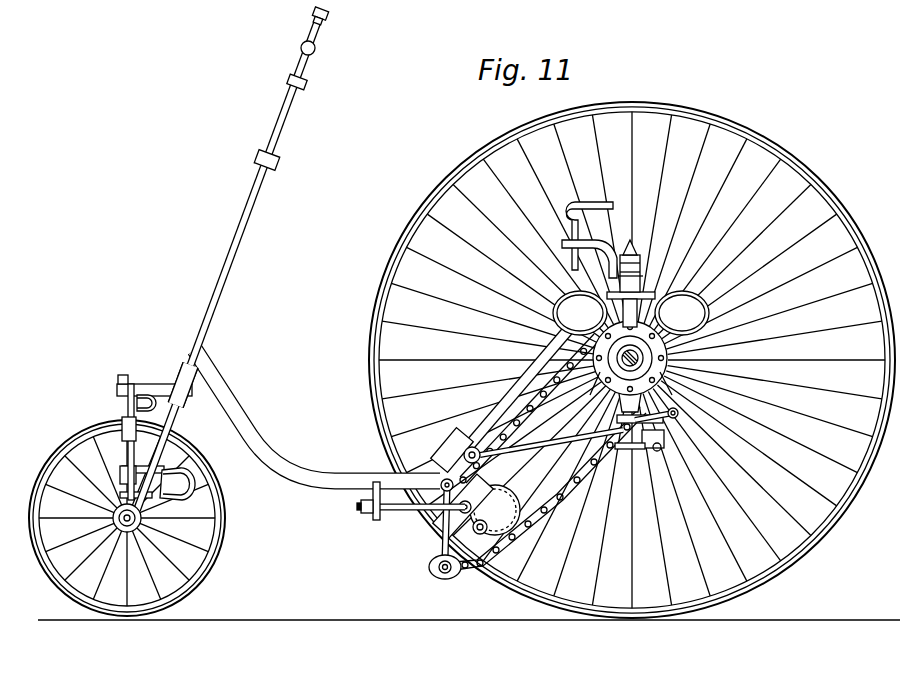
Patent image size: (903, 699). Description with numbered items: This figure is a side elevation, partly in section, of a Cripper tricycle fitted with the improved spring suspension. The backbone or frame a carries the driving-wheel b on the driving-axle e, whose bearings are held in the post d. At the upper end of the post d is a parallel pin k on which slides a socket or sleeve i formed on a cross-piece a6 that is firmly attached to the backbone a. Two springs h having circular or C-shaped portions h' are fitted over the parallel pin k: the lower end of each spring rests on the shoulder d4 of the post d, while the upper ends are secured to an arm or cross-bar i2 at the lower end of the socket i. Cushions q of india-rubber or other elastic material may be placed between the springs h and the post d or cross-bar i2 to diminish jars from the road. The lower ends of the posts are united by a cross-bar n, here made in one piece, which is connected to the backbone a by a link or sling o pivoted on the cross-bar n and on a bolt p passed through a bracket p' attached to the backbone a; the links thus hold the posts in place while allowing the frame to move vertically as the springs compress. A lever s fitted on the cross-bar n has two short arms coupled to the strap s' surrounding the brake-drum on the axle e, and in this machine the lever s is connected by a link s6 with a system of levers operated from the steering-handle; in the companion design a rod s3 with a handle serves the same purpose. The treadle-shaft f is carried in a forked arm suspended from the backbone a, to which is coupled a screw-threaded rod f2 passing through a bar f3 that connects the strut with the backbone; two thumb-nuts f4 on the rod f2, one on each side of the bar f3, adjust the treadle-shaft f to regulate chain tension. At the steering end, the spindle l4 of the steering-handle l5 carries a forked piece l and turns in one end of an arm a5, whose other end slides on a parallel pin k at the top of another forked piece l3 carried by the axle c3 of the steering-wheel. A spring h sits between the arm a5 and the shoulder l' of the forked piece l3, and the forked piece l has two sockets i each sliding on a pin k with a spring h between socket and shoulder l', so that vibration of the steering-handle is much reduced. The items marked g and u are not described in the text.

The backbone or frame a is at (252, 408).
The arm a5 is at (170, 378).
The cross-piece a6 is at (643, 275).
The driving-wheel b is at (627, 360).
The axle of the steering-wheel c3 is at (138, 522).
The post d is at (620, 400).
The shoulder d4 is at (668, 354).
The driving-axle e is at (630, 358).
The treadle-shaft f is at (495, 523).
The screw-threaded bar or rod f2 is at (440, 498).
The bar f3 is at (380, 513).
The thumb-nut f4 is at (395, 516).
The pivot pin g is at (677, 416).
The spring h is at (164, 447).
The circular or C-shaped portion h' is at (634, 312).
The socket or sleeve i is at (110, 466).
The arm or cross-bar i2 is at (656, 294).
The parallel pin k is at (109, 492).
The forked piece l is at (233, 258).
The shoulder l' is at (111, 458).
The forked piece l3 is at (122, 435).
The spindle l4 is at (283, 120).
The steering-handle l5 is at (301, 49).
The cross-bar n is at (665, 425).
The link or sling o is at (565, 440).
The bolt p is at (480, 445).
The bracket p' is at (451, 448).
The cushion q is at (631, 313).
The lever s is at (645, 453).
The strap s' is at (680, 384).
The rod s3 is at (594, 376).
The link s6 is at (625, 440).
The handle u is at (589, 240).